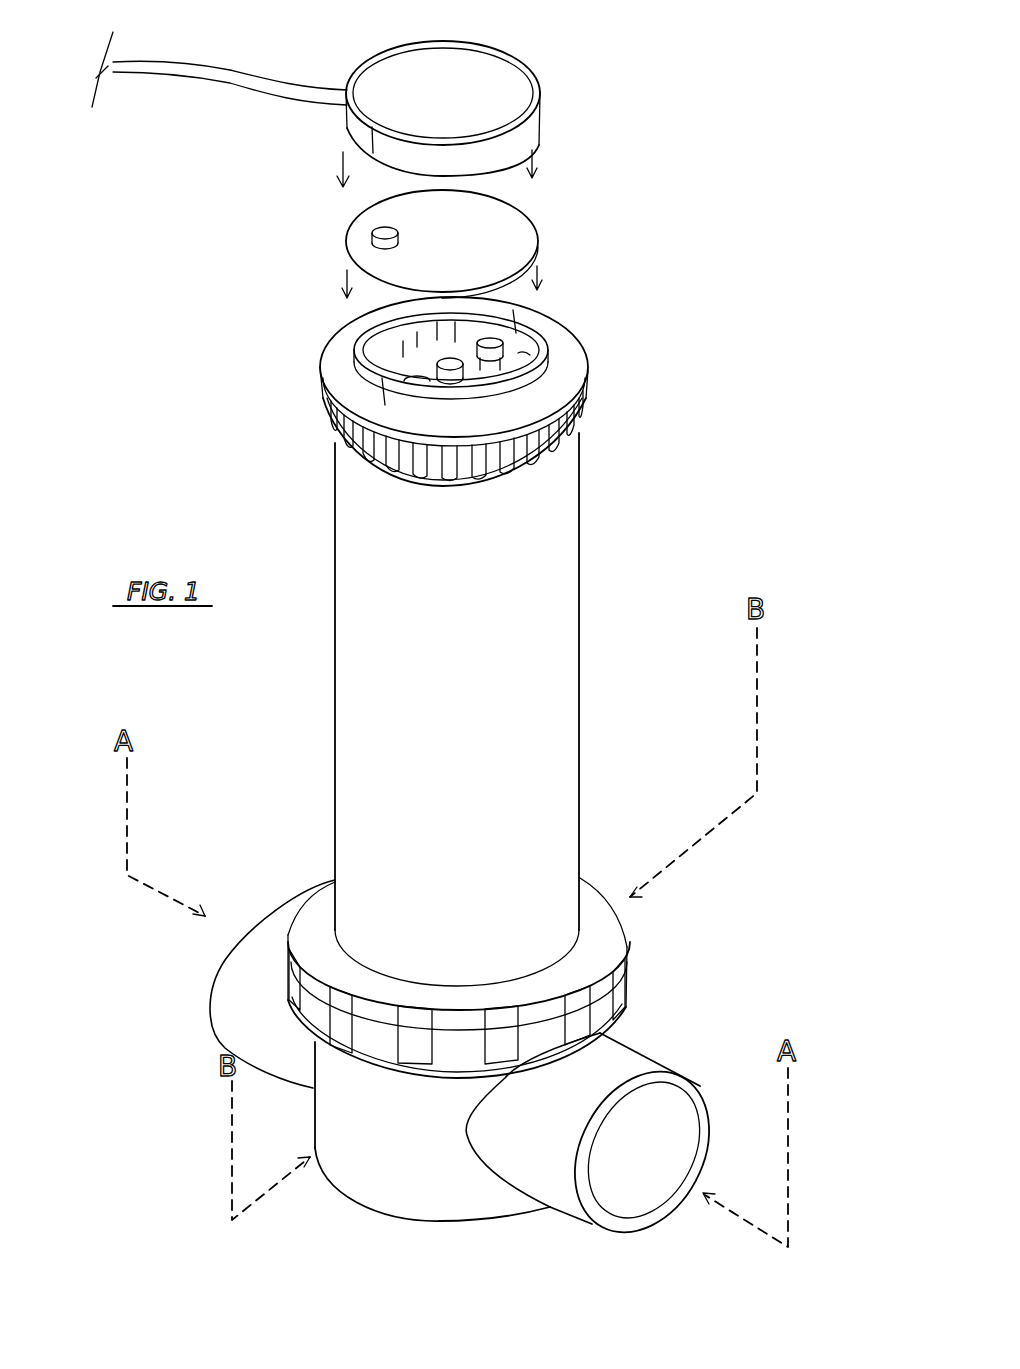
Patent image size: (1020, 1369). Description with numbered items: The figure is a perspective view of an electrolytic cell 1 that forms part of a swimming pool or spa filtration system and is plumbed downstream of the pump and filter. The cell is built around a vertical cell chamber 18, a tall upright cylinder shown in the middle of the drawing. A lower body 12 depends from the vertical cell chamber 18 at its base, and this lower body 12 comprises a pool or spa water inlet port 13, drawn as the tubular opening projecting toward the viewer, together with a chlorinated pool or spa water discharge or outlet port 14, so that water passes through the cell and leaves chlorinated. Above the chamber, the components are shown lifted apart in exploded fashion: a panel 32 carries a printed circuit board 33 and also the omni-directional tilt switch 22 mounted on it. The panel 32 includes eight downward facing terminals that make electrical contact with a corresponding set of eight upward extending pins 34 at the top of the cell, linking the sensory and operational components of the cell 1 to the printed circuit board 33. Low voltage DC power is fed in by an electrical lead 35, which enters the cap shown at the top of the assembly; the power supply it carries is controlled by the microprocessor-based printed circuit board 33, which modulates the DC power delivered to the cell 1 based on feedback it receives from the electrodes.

The electrolytic cell 1 is at (150, 455).
The lower body 12 is at (493, 1220).
The pool or spa water inlet port 13 is at (663, 1159).
The chlorinated pool or spa water discharge or outlet port 14 is at (270, 928).
The vertical cell chamber 18 is at (581, 568).
The omni-directional tilt switch 22 is at (368, 240).
The panel 32 is at (520, 237).
The printed circuit board (PCB) 33 is at (490, 246).
The upward extending pins 34 is at (520, 353).
The electrical lead 35 is at (240, 73).